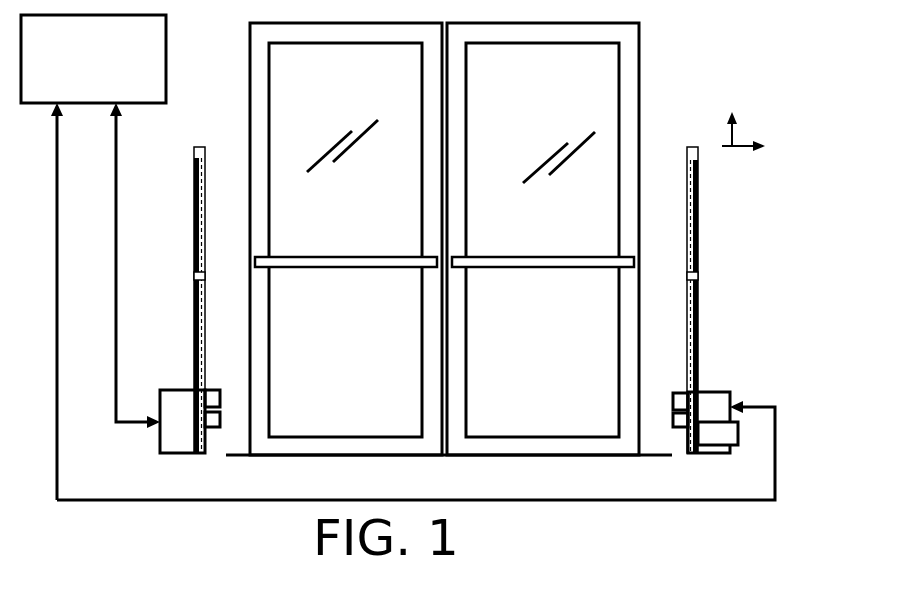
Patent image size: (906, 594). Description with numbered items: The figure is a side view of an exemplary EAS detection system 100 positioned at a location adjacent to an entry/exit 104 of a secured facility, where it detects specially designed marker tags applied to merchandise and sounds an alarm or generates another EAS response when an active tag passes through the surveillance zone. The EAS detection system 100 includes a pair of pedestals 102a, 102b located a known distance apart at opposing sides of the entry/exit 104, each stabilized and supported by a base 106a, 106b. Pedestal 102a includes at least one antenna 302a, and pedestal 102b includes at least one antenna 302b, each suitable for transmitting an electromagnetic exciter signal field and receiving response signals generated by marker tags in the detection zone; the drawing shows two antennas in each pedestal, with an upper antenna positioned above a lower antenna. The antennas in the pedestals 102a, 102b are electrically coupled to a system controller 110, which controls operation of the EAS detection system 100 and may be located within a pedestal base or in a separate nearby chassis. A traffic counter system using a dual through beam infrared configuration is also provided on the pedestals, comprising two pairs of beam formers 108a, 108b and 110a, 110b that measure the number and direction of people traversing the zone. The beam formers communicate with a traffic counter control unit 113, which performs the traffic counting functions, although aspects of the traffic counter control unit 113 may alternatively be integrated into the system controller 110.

The EAS detection system 100 is at (704, 67).
The entry/exit 104 is at (641, 106).
The system controller 110 is at (79, 91).
The pedestal 102a is at (199, 275).
The pedestal 102b is at (698, 277).
The antenna 302a is at (205, 291).
The antenna 302b is at (686, 263).
The base 106a is at (183, 390).
The base 106b is at (718, 392).
The beam former 108a is at (216, 390).
The beam former 108b is at (681, 393).
The beam former 110a is at (220, 423).
The beam former 110b is at (674, 422).
The traffic counter control unit 113 is at (732, 444).